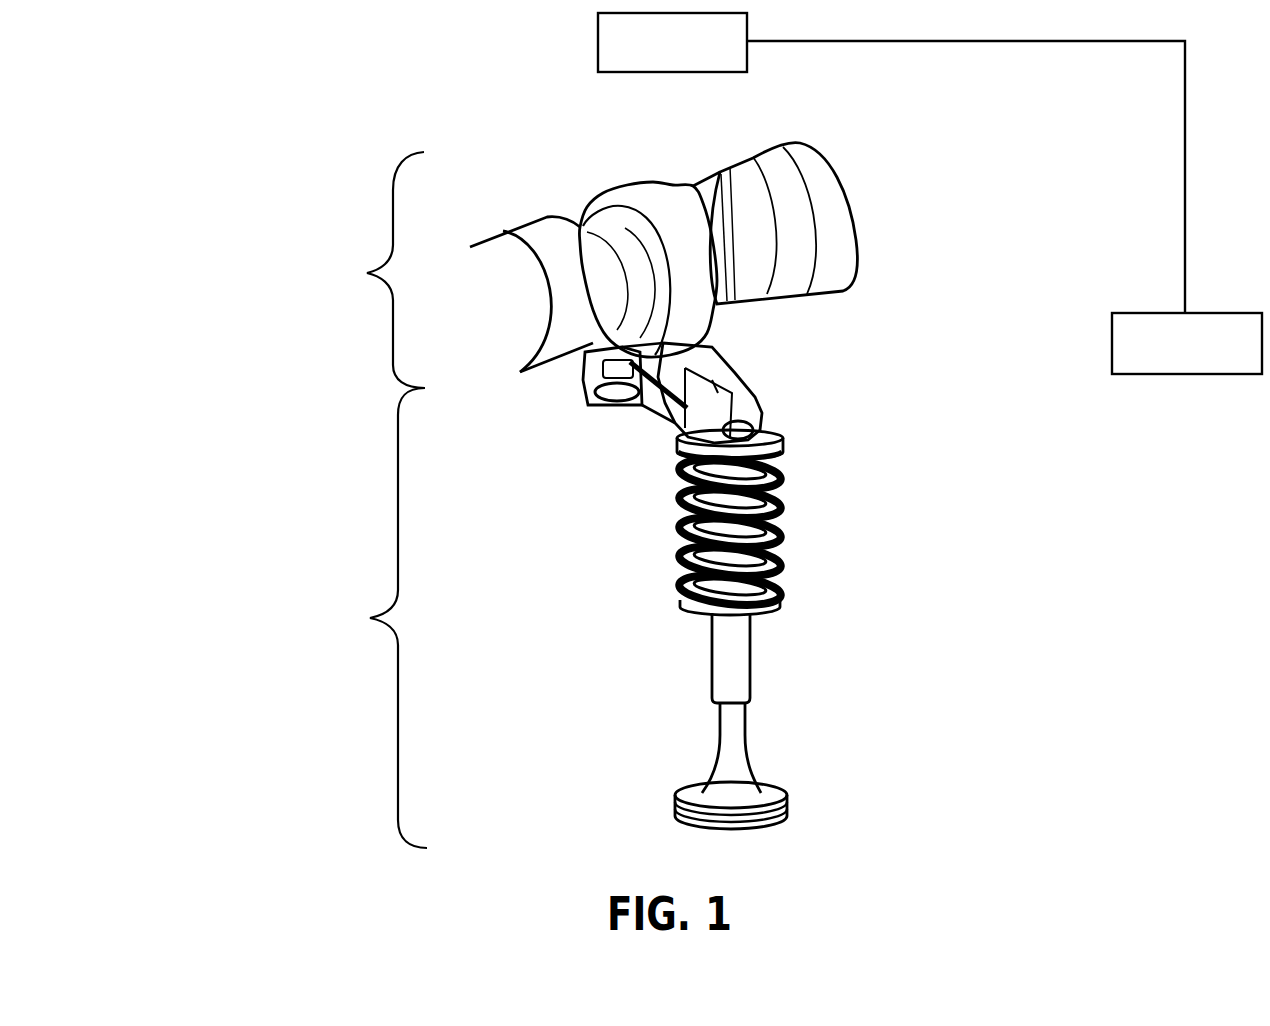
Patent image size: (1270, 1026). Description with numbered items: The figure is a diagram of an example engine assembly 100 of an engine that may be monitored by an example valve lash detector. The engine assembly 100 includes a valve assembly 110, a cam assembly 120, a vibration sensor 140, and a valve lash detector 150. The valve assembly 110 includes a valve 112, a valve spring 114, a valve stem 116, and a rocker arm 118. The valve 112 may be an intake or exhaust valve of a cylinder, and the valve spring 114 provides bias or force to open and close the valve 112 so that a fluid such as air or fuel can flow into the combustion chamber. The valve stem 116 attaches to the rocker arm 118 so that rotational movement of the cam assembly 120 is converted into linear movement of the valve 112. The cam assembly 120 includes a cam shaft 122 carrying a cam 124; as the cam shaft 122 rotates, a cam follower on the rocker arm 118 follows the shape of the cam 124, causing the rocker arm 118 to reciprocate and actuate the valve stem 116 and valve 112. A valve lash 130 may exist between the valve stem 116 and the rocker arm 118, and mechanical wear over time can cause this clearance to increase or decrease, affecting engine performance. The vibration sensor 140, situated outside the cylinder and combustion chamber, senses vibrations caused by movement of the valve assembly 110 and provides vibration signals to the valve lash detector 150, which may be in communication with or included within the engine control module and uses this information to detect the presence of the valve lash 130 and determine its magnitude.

The engine assembly 100 is at (176, 64).
The valve assembly 110 is at (375, 618).
The valve 112 is at (750, 736).
The valve spring 114 is at (789, 531).
The valve stem 116 is at (755, 430).
The rocker arm 118 is at (736, 370).
The cam assembly 120 is at (373, 270).
The cam shaft 122 is at (849, 178).
The cam 124 is at (619, 186).
The valve lash 130 is at (667, 442).
The vibration sensor 140 is at (891, 163).
The valve lash detector 150 is at (1187, 343).